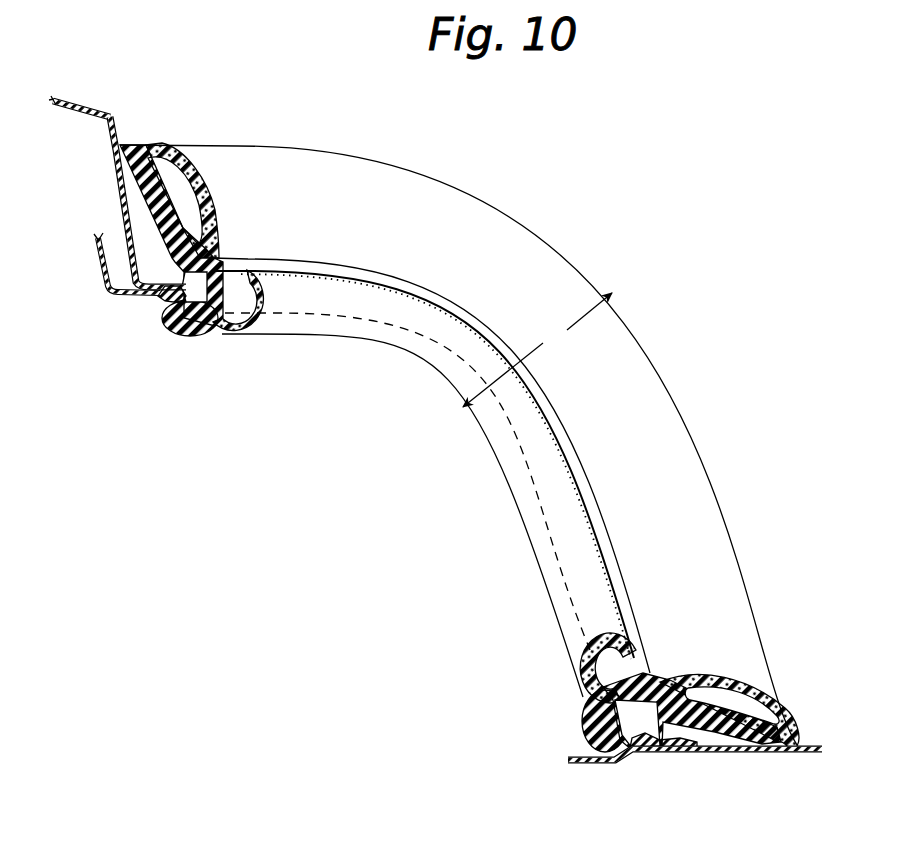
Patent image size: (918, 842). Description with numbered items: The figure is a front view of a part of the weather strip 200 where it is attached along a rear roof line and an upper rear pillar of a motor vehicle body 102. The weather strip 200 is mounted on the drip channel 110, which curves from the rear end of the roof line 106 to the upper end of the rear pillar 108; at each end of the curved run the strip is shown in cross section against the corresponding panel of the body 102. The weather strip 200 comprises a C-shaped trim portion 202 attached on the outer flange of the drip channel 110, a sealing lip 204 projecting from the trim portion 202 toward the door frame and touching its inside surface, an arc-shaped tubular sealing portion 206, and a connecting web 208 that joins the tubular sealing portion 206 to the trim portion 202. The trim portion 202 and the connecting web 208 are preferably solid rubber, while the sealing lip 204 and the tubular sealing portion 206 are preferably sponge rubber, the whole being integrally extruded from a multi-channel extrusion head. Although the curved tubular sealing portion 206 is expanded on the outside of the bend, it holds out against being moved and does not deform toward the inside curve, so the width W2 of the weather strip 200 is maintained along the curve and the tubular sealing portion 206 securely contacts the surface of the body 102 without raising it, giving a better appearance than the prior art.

The weather strip 200 is at (290, 141).
The trim portion 202 is at (184, 332).
The sealing lip 204 is at (260, 322).
The tubular sealing portion 206 is at (192, 170).
The connecting web 208 is at (163, 247).
The body 102 is at (120, 182).
The roof line 106 is at (97, 104).
The rear pillar 108 is at (770, 757).
The drip channel 110 is at (156, 295).
The width of the weather strip W2 is at (537, 350).